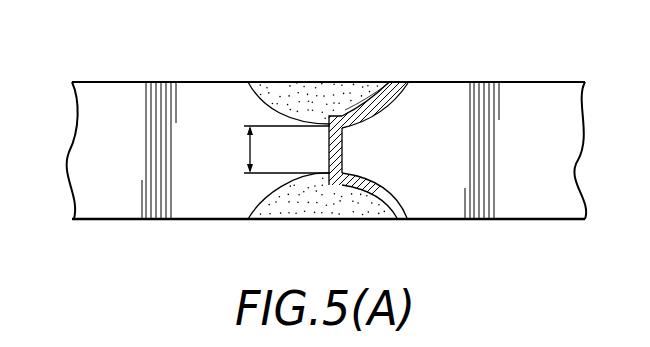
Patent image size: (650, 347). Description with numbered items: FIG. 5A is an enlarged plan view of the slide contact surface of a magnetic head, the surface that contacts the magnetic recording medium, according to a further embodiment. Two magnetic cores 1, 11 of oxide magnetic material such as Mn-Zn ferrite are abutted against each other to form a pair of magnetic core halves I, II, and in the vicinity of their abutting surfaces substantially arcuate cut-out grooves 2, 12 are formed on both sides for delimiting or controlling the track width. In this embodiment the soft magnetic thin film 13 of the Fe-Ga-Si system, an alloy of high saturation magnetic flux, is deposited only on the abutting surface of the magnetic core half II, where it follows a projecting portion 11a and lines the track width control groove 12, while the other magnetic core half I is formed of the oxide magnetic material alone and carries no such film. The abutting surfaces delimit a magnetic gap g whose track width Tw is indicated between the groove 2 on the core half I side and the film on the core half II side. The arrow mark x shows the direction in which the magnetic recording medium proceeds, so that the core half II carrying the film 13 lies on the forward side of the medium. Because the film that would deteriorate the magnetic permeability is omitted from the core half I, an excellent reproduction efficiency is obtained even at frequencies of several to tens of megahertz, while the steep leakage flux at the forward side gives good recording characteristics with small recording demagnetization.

The magnetic core 1 is at (110, 100).
The magnetic core 11 is at (542, 105).
The projecting portion of second member 11a is at (342, 155).
The track width control groove 12 is at (387, 203).
The soft magnetic thin film 13 is at (387, 95).
The track width control groove 2 is at (268, 198).
The magnetic gap g is at (328, 162).
The track width Tw is at (276, 149).
The arrow mark x is at (290, 48).
The magnetic core half I is at (60, 151).
The magnetic core half II is at (590, 160).